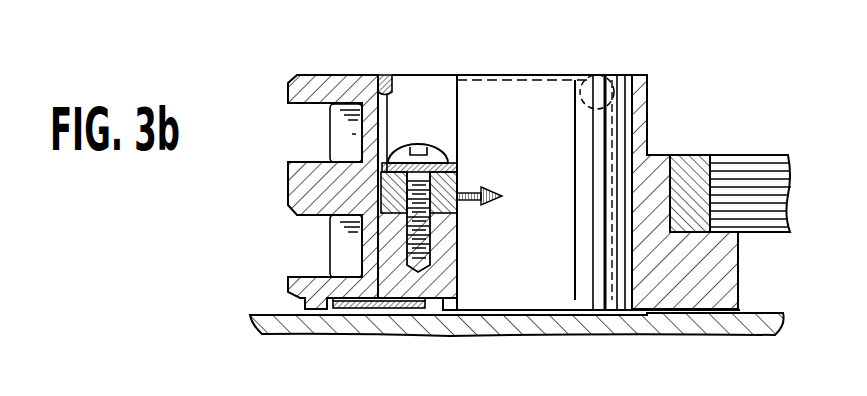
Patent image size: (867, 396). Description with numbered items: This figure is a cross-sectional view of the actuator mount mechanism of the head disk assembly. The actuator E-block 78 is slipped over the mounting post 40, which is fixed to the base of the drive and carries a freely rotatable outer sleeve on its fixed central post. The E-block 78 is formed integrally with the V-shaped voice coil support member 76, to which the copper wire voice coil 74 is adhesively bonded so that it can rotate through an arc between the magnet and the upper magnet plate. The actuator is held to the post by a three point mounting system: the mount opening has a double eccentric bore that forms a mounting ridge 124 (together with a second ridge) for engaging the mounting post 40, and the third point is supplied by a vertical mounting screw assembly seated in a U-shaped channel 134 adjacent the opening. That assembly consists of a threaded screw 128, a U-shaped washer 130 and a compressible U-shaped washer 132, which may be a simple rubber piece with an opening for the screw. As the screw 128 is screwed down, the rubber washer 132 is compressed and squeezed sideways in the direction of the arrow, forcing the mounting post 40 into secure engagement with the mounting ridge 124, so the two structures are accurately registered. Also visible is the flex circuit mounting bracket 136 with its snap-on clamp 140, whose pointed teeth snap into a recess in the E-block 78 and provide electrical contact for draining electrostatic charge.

The mounting post 40 is at (549, 100).
The voice coil 74 is at (742, 155).
The voice coil support member 76 is at (730, 282).
The E-block 78 is at (322, 78).
The mounting ridge 124 is at (592, 72).
The threaded screw 128 is at (433, 78).
The U-shaped washer 130 is at (458, 176).
The compressible U-shaped washer 132 is at (460, 175).
The U-shaped channel 134 is at (387, 78).
The flex circuit mounting bracket 136 is at (338, 252).
The snap-on clamp 140 is at (313, 330).